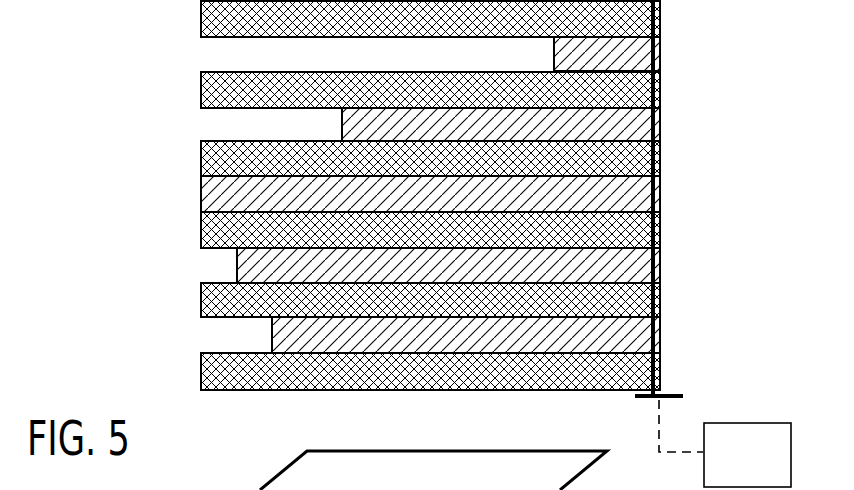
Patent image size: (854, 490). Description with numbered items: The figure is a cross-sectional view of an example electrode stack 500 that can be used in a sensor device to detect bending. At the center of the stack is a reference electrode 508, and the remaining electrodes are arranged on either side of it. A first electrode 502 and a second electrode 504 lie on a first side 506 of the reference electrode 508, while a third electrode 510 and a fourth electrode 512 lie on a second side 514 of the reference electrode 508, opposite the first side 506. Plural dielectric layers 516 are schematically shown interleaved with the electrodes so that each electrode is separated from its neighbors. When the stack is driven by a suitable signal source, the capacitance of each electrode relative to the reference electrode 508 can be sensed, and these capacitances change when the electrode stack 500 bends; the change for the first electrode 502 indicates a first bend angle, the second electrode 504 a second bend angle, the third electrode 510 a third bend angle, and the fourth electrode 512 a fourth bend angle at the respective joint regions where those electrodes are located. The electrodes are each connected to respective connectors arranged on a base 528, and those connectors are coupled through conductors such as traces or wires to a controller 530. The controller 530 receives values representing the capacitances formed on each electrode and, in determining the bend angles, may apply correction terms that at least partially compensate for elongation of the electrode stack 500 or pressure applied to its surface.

The electrode stack 500 is at (76, 198).
The first electrode 502 is at (554, 52).
The second electrode 504 is at (342, 123).
The first side 506 is at (716, 99).
The reference electrode 508 is at (201, 192).
The third electrode 510 is at (237, 263).
The fourth electrode 512 is at (272, 332).
The second side 514 is at (718, 271).
The dielectric layers 516 is at (201, 16).
The base 528 is at (668, 388).
The controller 530 is at (763, 466).